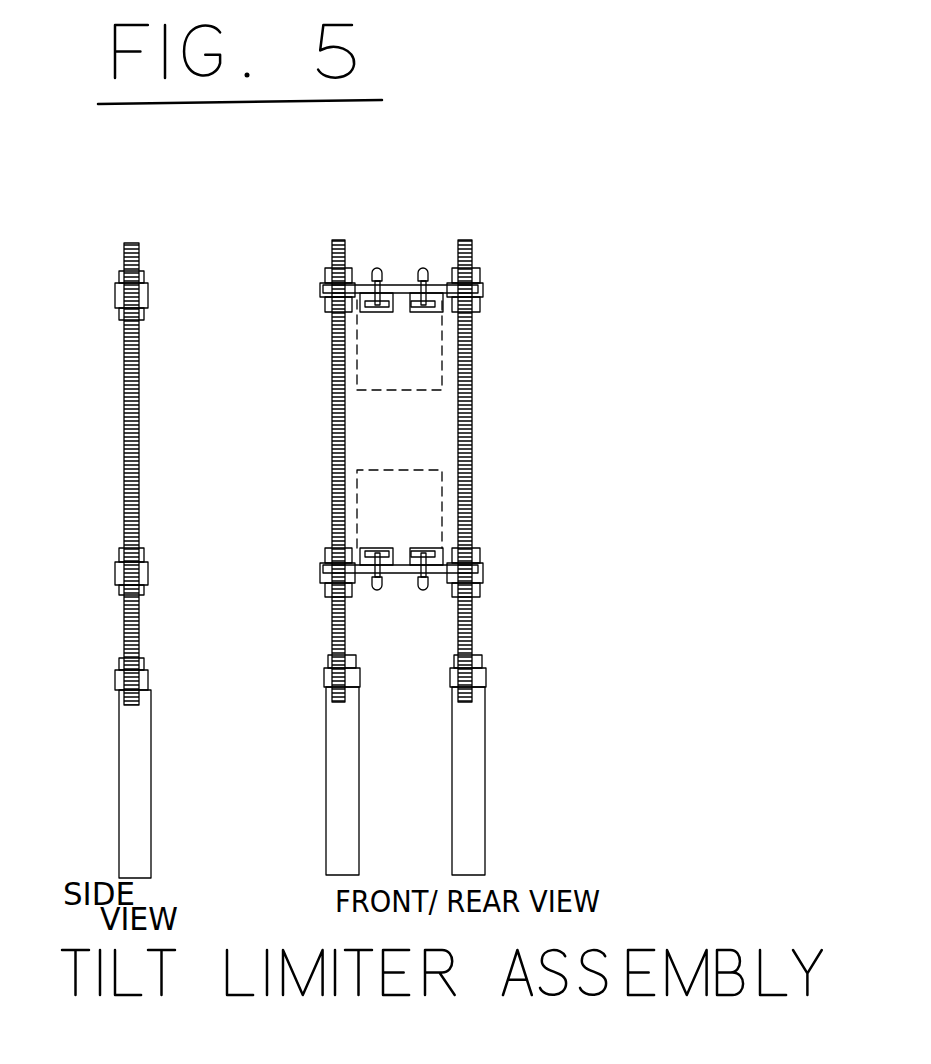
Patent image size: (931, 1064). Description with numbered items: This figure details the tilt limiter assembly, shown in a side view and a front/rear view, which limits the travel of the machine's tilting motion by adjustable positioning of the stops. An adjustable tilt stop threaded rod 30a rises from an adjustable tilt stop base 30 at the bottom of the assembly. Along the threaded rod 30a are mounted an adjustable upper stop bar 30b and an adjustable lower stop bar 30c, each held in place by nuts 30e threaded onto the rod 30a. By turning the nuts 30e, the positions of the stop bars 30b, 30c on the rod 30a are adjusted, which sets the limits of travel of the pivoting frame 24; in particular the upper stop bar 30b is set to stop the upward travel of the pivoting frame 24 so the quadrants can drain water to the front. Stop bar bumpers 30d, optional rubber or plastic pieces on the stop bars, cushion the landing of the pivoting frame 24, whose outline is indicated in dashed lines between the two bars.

The pivoting frame 24 is at (372, 368).
The adjustable tilt stop base 30 is at (732, 858).
The adjustable tilt stop threaded rod 30a is at (476, 425).
The adjustable upper stop bar 30b is at (402, 290).
The adjustable lower stop bar 30c is at (412, 585).
The stop bar bumpers 30d is at (368, 300).
The nuts 30e is at (478, 277).